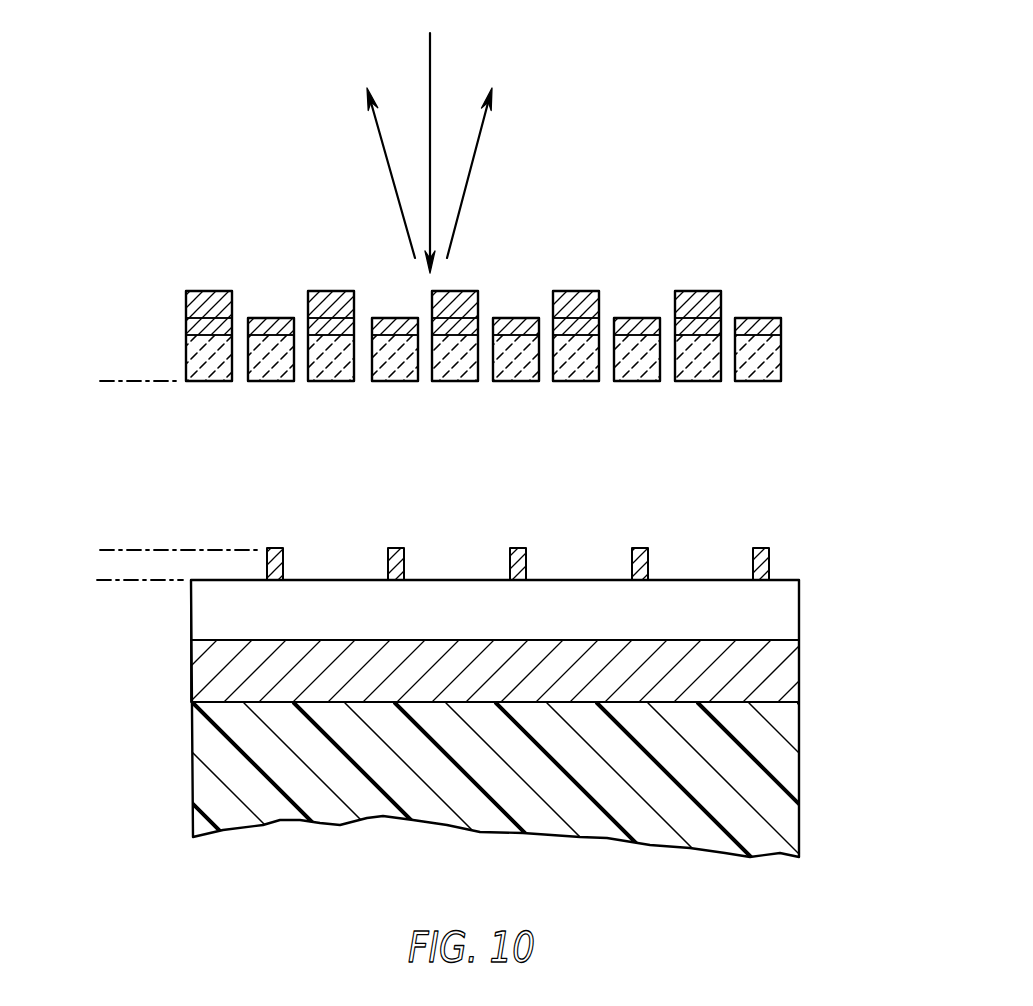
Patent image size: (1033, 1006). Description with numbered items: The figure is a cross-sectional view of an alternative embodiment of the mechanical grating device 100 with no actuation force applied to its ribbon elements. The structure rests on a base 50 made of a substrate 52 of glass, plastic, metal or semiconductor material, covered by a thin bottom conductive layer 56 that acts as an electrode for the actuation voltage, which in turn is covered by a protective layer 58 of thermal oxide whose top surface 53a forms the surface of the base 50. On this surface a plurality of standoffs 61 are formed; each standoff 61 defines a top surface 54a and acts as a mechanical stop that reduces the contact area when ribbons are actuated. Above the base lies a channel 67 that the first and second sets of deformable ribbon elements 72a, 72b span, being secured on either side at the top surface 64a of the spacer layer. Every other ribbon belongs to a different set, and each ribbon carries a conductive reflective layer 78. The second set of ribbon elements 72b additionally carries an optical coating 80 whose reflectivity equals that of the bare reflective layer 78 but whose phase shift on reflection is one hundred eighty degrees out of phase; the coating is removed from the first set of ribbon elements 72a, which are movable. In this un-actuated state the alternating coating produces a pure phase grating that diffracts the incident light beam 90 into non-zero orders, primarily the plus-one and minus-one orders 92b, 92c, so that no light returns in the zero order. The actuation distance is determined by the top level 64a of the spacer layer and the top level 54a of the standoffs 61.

The mechanical grating device 100 is at (653, 120).
The incident light beam 90 is at (427, 60).
The +1 order 92b is at (468, 182).
The −1 order 92c is at (389, 168).
The optical coating 80 is at (197, 303).
The reflective layer 78 is at (270, 320).
The first set of deformable ribbon elements 72a is at (633, 340).
The second set of deformable ribbon elements 72b is at (698, 362).
The top surface of the spacer layer 64a is at (108, 382).
The channel 67 is at (640, 482).
The top surface of the standoffs 54a is at (120, 549).
The top surface of the protective layer 53a is at (108, 583).
The standoffs 61 is at (650, 563).
The protective layer 58 is at (787, 610).
The bottom conductive layer 56 is at (787, 667).
The substrate 52 is at (788, 752).
The base 50 is at (479, 697).